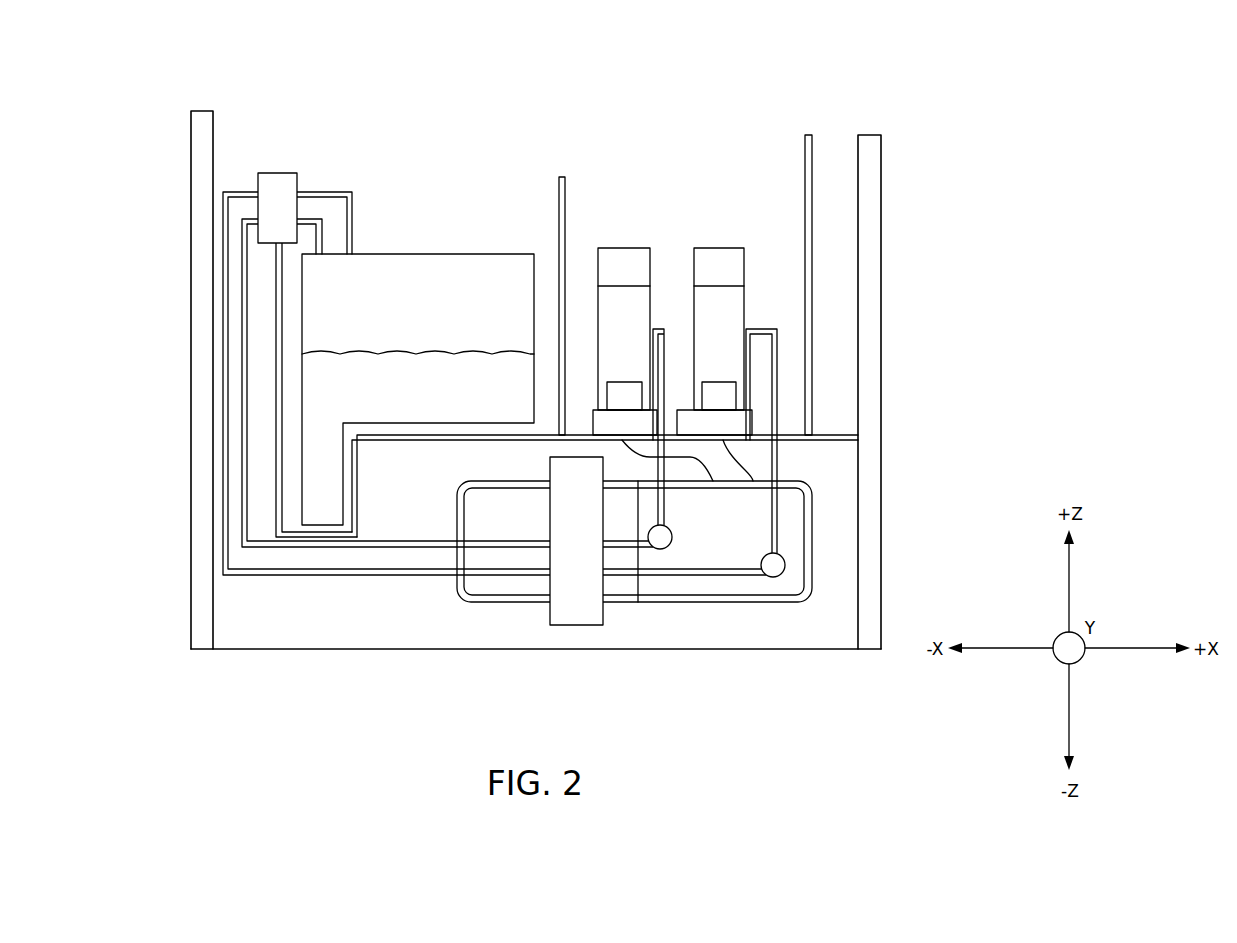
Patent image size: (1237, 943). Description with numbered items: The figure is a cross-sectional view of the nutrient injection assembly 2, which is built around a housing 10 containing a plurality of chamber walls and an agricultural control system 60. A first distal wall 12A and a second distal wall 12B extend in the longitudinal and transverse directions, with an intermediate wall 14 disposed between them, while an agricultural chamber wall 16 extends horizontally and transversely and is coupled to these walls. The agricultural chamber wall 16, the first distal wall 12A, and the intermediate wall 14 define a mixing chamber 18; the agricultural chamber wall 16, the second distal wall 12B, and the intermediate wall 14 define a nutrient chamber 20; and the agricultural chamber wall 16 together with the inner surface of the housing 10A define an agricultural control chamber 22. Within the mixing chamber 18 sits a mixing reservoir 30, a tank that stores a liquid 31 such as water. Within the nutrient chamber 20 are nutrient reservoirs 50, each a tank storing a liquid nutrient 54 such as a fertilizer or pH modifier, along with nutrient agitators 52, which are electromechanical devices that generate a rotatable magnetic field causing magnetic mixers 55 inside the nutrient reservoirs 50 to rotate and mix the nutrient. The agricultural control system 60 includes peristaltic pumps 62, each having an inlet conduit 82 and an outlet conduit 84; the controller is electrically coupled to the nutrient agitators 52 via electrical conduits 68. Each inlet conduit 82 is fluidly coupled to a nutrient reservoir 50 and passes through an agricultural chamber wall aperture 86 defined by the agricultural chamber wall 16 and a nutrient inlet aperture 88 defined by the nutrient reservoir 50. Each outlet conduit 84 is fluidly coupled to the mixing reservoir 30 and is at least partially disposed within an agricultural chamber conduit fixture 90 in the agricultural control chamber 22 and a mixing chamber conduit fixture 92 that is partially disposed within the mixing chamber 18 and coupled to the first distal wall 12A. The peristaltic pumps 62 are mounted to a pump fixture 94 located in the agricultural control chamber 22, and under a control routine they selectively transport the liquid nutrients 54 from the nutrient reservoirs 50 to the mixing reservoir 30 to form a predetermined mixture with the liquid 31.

The nutrient injection assembly 2 is at (922, 108).
The housing 10 is at (191, 175).
The inner surface of the housing 10A is at (835, 650).
The first distal wall 12A is at (275, 316).
The second distal wall 12B is at (808, 135).
The intermediate wall 14 is at (562, 177).
The agricultural chamber wall 16 is at (357, 488).
The mixing chamber 18 is at (495, 196).
The nutrient chamber 20 is at (698, 181).
The agricultural control chamber 22 is at (284, 585).
The mixing reservoir 30 is at (399, 254).
The liquid 31 is at (400, 353).
The nutrient reservoir 50 is at (627, 248).
The nutrient agitator 52 is at (756, 422).
The liquid nutrient 54 is at (608, 305).
The magnetic mixer 55 is at (623, 382).
The agricultural control system 60 is at (693, 668).
The peristaltic pump 62 is at (672, 537).
The electrical conduit 68 is at (640, 457).
The inlet conduit 82 is at (655, 320).
The outlet conduit 84 is at (223, 458).
The agricultural chamber wall aperture 86 is at (795, 450).
The nutrient inlet aperture 88 is at (765, 318).
The agricultural chamber conduit fixture 90 is at (590, 626).
The mixing chamber conduit fixture 92 is at (277, 173).
The pump fixture 94 is at (458, 596).